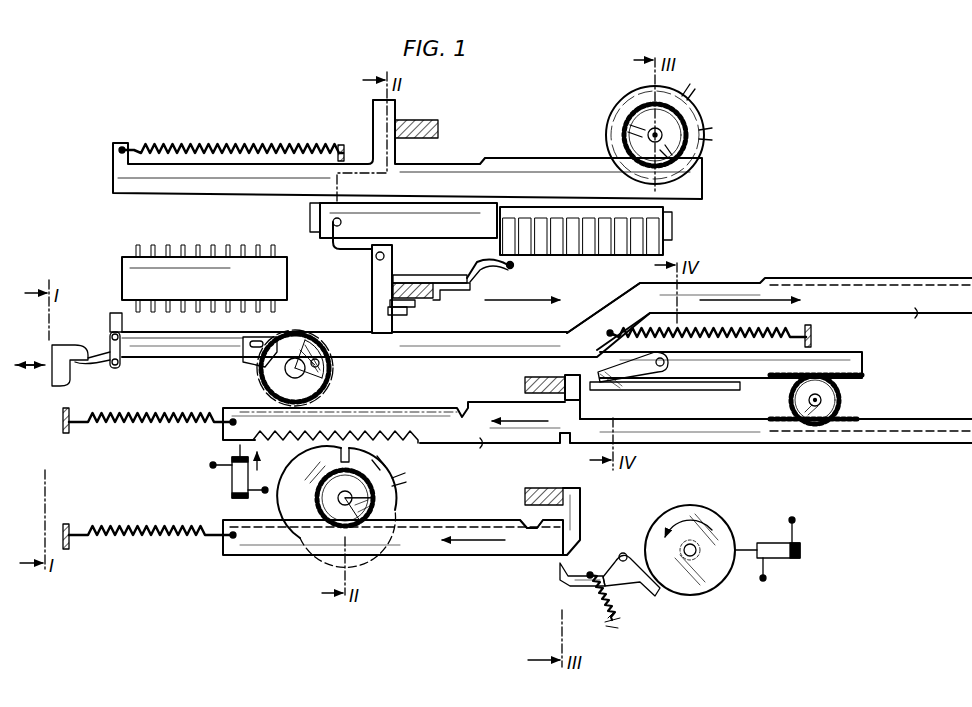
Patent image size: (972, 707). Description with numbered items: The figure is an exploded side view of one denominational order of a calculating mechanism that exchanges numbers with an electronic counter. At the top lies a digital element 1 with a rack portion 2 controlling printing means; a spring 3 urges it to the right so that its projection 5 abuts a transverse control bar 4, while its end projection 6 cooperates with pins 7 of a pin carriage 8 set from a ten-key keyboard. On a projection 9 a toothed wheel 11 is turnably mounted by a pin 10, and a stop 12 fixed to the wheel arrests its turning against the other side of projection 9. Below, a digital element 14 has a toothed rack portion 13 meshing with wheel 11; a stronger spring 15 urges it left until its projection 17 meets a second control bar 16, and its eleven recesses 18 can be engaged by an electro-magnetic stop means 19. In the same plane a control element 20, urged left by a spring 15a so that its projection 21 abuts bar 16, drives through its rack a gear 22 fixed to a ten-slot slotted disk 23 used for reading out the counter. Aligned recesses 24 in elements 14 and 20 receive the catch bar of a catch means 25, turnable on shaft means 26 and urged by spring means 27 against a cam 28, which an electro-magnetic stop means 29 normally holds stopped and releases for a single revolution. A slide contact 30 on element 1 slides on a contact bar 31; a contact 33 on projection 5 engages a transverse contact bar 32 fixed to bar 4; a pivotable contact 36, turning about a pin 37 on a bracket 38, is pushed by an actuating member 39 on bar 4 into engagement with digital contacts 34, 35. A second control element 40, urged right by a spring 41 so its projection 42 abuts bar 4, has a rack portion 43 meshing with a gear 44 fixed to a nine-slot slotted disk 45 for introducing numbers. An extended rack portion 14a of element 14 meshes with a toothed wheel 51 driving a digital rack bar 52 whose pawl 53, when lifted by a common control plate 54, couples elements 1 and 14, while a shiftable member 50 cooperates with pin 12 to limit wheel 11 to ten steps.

The digital element 1 is at (916, 319).
The rack portion 2 is at (820, 279).
The spring 3 is at (795, 330).
The control bar 4 is at (438, 131).
The projection 5 is at (369, 330).
The projection 6 is at (110, 316).
The pin 7 is at (228, 246).
The pin carriage 8 is at (128, 278).
The projection 9 is at (325, 378).
The pin 10 is at (292, 379).
The toothed wheel 11 is at (265, 373).
The stop 12 is at (320, 365).
The toothed rack portion 13 is at (394, 408).
The digital element 14 is at (485, 446).
The extended rack portion 14a is at (897, 446).
The spring 15 is at (166, 413).
The spring 15a is at (171, 528).
The control bar 16 is at (525, 380).
The projection 17 is at (568, 335).
The recess 18 is at (398, 441).
The electro-magnetic stop means 19 is at (232, 487).
The control element 20 is at (418, 556).
The projection 21 is at (582, 491).
The gear 22 is at (376, 504).
The slotted disk 23 is at (306, 481).
The recess 24 is at (566, 446).
The catch means 25 is at (638, 583).
The shaft means 26 is at (623, 553).
The spring means 27 is at (590, 605).
The cam 28 is at (715, 523).
The electro-magnetic stop means 29 is at (782, 561).
The slide contact 30 is at (350, 251).
The contact bar 31 is at (320, 216).
The contact bar 32 is at (412, 308).
The contact 33 is at (398, 316).
The digital contact 34 is at (672, 224).
The digital contact 35 is at (601, 257).
The pivotable contact 36 is at (514, 267).
The pin 37 is at (490, 271).
The bracket 38 is at (436, 275).
The actuating member 39 is at (455, 292).
The control element 40 is at (703, 187).
The spring 41 is at (258, 150).
The projection 42 is at (373, 106).
The rack portion 43 is at (522, 158).
The gear 44 is at (624, 136).
The slotted disk 45 is at (612, 111).
The shiftable member 50 is at (111, 338).
The toothed wheel 51 is at (840, 399).
The digital rack bar 52 is at (864, 365).
The pawl 53 is at (640, 363).
The control plate 54 is at (650, 391).